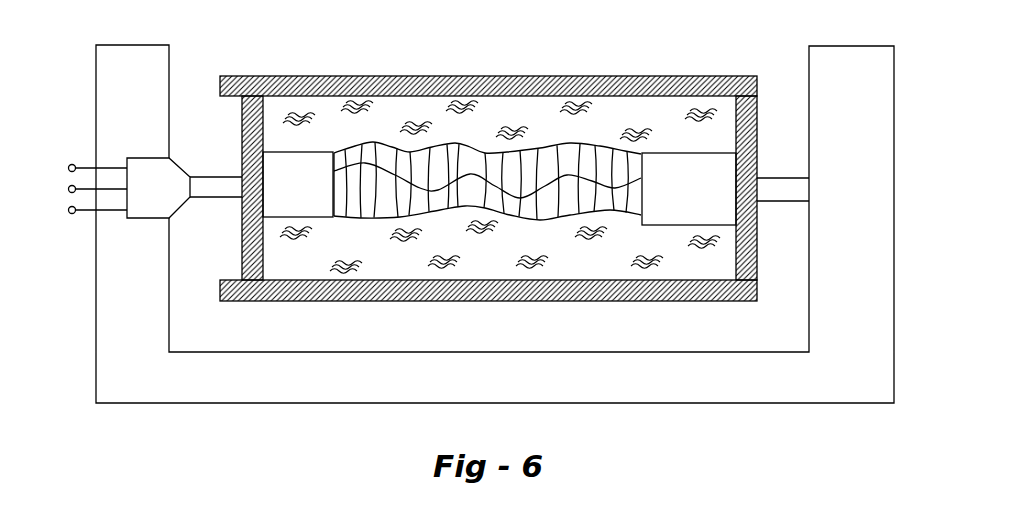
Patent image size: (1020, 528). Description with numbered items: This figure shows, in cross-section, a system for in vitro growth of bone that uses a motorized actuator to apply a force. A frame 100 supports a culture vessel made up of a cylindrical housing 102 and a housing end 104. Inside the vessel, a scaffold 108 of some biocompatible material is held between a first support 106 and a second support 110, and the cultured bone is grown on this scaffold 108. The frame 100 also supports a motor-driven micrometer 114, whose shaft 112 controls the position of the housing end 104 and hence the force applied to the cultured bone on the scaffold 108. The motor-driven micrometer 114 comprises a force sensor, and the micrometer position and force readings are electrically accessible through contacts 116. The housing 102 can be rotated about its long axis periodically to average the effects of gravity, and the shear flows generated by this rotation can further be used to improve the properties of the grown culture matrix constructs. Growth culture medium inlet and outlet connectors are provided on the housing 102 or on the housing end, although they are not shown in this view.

The frame 100 is at (495, 224).
The cylindrical housing 102 is at (707, 76).
The housing end 104 is at (241, 126).
The first support 106 is at (298, 184).
The scaffold 108 is at (487, 181).
The second support 110 is at (689, 189).
The shaft 112 is at (226, 195).
The motor-driven micrometer 114 is at (154, 158).
The contacts 116 is at (63, 147).